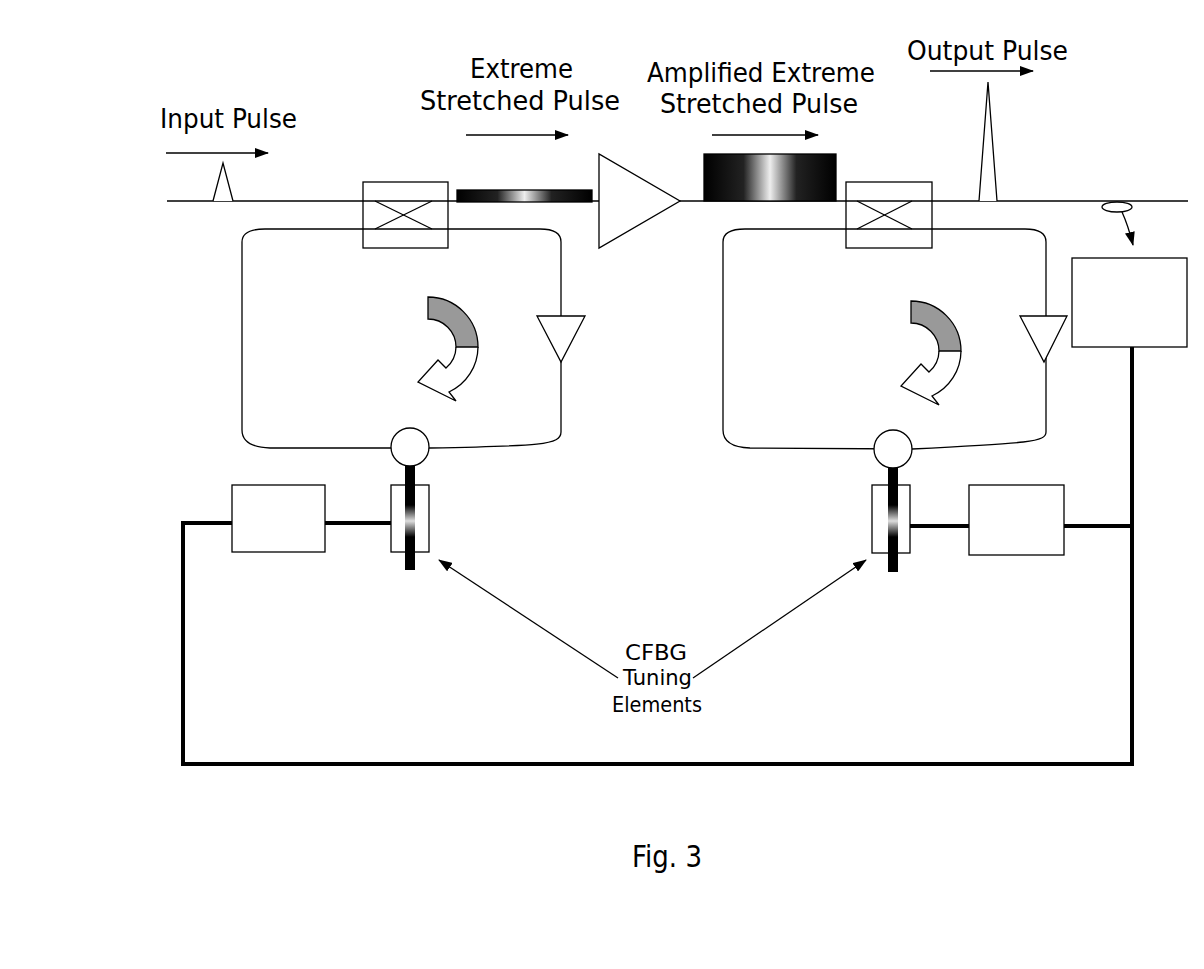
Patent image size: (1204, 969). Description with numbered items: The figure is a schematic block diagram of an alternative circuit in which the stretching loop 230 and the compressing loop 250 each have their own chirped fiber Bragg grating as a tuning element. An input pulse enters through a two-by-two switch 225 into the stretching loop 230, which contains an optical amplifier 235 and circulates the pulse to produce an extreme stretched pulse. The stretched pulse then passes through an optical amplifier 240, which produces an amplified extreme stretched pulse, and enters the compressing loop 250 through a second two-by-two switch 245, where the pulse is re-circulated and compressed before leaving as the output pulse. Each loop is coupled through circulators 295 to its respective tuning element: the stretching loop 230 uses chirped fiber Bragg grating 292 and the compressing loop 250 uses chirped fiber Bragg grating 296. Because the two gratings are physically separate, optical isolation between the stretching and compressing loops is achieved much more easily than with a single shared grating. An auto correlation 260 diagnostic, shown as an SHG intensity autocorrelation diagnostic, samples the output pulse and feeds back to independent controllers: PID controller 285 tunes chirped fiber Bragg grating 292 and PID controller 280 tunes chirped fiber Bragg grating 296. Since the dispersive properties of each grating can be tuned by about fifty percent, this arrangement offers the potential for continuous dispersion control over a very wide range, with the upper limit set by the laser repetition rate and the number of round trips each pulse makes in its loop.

The 2-x-2 switch 225 is at (401, 174).
The stretching loop 230 is at (262, 316).
The optical amplifier 235 is at (591, 313).
The optical amplifier 240 is at (634, 168).
The 2-x-2 switch 245 is at (888, 172).
The compressing loop 250 is at (747, 324).
The auto correlation 260 is at (1163, 363).
The PID controller 280 is at (1042, 571).
The PID controller 285 is at (232, 503).
The chirped fiber Bragg grating 292 is at (430, 525).
The circulators 295 is at (450, 460).
The chirped fiber Bragg grating 296 is at (873, 527).